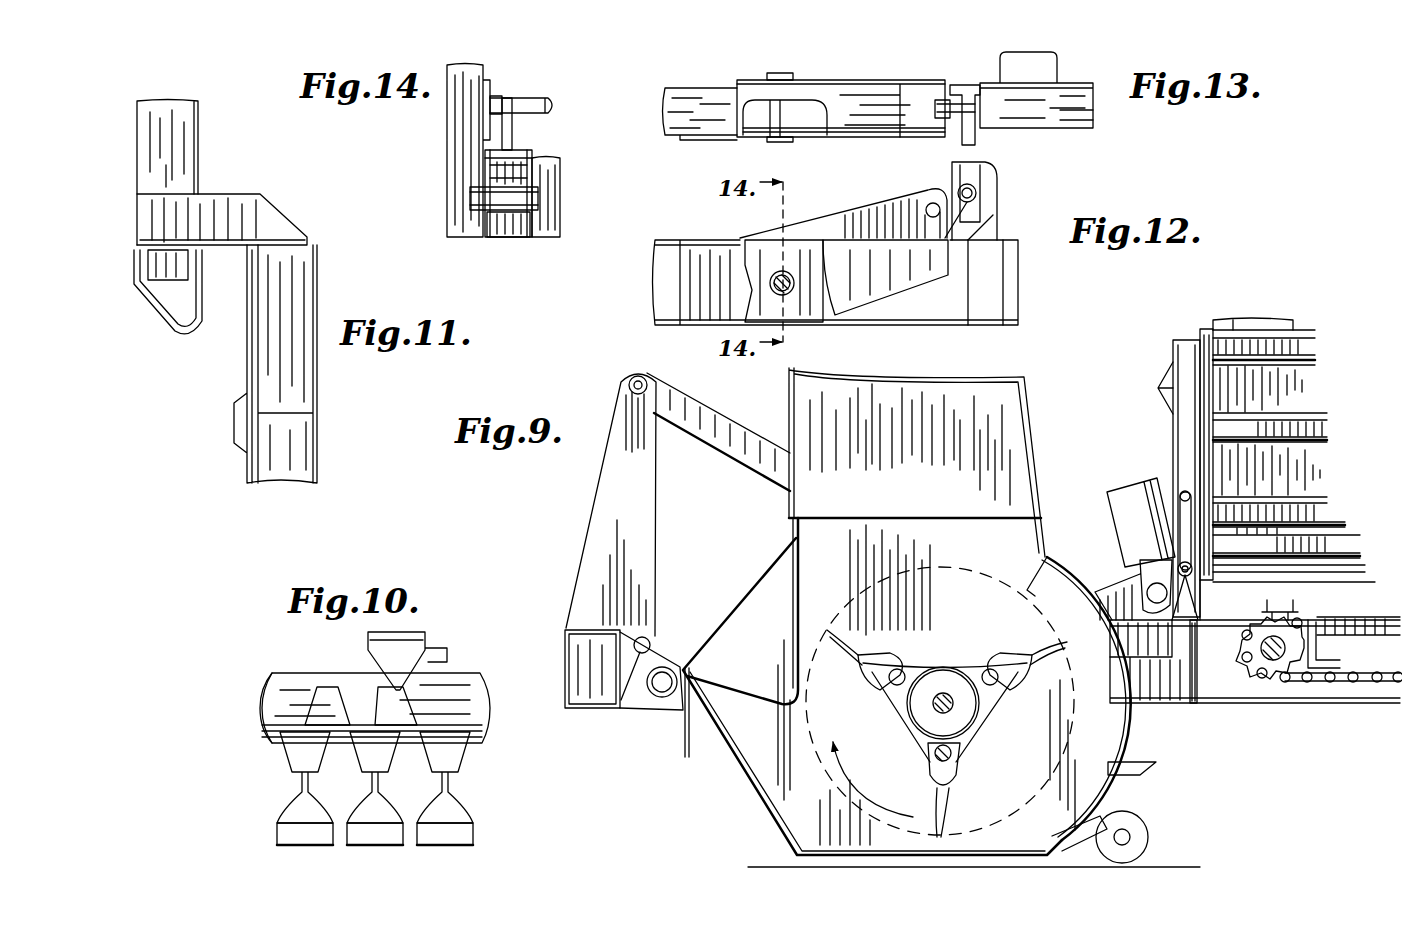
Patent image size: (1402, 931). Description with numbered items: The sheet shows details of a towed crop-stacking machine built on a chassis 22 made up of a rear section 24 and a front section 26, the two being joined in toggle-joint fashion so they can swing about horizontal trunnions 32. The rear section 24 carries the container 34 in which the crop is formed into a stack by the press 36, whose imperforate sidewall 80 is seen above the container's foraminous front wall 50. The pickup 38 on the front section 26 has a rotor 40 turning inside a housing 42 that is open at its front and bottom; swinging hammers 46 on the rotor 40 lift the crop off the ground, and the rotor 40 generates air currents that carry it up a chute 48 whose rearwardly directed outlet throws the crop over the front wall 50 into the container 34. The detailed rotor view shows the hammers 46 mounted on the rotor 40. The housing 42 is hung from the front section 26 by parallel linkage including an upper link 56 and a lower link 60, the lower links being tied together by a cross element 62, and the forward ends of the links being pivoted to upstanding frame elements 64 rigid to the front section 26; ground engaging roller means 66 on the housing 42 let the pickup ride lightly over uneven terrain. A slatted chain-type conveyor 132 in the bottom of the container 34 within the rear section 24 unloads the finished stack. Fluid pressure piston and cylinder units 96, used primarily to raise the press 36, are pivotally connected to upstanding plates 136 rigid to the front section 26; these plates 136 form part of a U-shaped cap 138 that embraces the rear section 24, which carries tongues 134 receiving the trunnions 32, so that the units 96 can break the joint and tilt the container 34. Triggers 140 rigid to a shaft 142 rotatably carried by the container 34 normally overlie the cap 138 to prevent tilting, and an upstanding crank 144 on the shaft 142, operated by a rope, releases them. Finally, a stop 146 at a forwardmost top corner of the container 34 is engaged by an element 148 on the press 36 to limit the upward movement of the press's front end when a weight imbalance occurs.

In FIG. 9, the chassis 22 is at (1263, 707).
In FIG. 14, the rear section 24 is at (515, 240).
In FIG. 13, the rear section 24 is at (1095, 118).
In FIG. 12, the rear section 24 is at (1012, 280).
In FIG. 9, the rear section 24 is at (1342, 694).
In FIG. 13, the front section 26 is at (690, 88).
In FIG. 12, the front section 26 is at (660, 283).
In FIG. 9, the front section 26 is at (592, 708).
In FIG. 14, the trunnions 32 is at (540, 197).
In FIG. 13, the trunnions 32 is at (786, 74).
In FIG. 12, the trunnions 32 is at (792, 278).
In FIG. 11, the container 34 is at (320, 408).
In FIG. 14, the container 34 is at (487, 72).
In FIG. 13, the container 34 is at (1088, 80).
In FIG. 9, the container 34 is at (1171, 428).
In FIG. 11, the press 36 is at (206, 141).
In FIG. 9, the press 36 is at (1250, 315).
In FIG. 9, the pickup 38 is at (742, 792).
In FIG. 10, the rotor 40 is at (492, 734).
In FIG. 9, the rotor 40 is at (904, 716).
In FIG. 9, the housing 42 is at (1124, 742).
In FIG. 10, the swinging hammers 46 is at (428, 640).
In FIG. 9, the swinging hammers 46 is at (948, 812).
In FIG. 9, the chute 48 is at (1016, 396).
In FIG. 9, the front wall 50 is at (1171, 360).
In FIG. 9, the upper link 56 is at (728, 444).
In FIG. 9, the lower link 60 is at (670, 631).
In FIG. 9, the cross element 62 is at (650, 697).
In FIG. 9, the upstanding frame elements 64 is at (597, 521).
In FIG. 9, the ground engaging roller means 66 is at (1146, 830).
In FIG. 9, the sidewall 80 is at (1298, 373).
In FIG. 9, the fluid pressure piston and cylinder units 96 is at (1110, 490).
In FIG. 9, the slatted chain-type conveyor 132 is at (1297, 613).
In FIG. 14, the tongues 134 is at (532, 219).
In FIG. 13, the tongues 134 is at (808, 132).
In FIG. 12, the tongues 134 is at (925, 312).
In FIG. 9, the tongues 134 is at (1150, 695).
In FIG. 14, the upstanding plates 136 is at (476, 157).
In FIG. 13, the upstanding plates 136 is at (868, 80).
In FIG. 12, the upstanding plates 136 is at (873, 208).
In FIG. 9, the upstanding plates 136 is at (1133, 592).
In FIG. 14, the U-shaped cap 138 is at (531, 172).
In FIG. 13, the U-shaped cap 138 is at (876, 132).
In FIG. 12, the U-shaped cap 138 is at (935, 256).
In FIG. 9, the U-shaped cap 138 is at (1165, 650).
In FIG. 14, the triggers 140 is at (514, 118).
In FIG. 13, the triggers 140 is at (935, 108).
In FIG. 12, the triggers 140 is at (972, 232).
In FIG. 9, the triggers 140 is at (1190, 622).
In FIG. 14, the shaft 142 is at (540, 101).
In FIG. 13, the shaft 142 is at (975, 121).
In FIG. 12, the shaft 142 is at (978, 193).
In FIG. 9, the shaft 142 is at (1194, 566).
In FIG. 9, the crank 144 is at (1194, 500).
In FIG. 11, the stop 146 is at (245, 206).
In FIG. 11, the element 148 is at (168, 262).